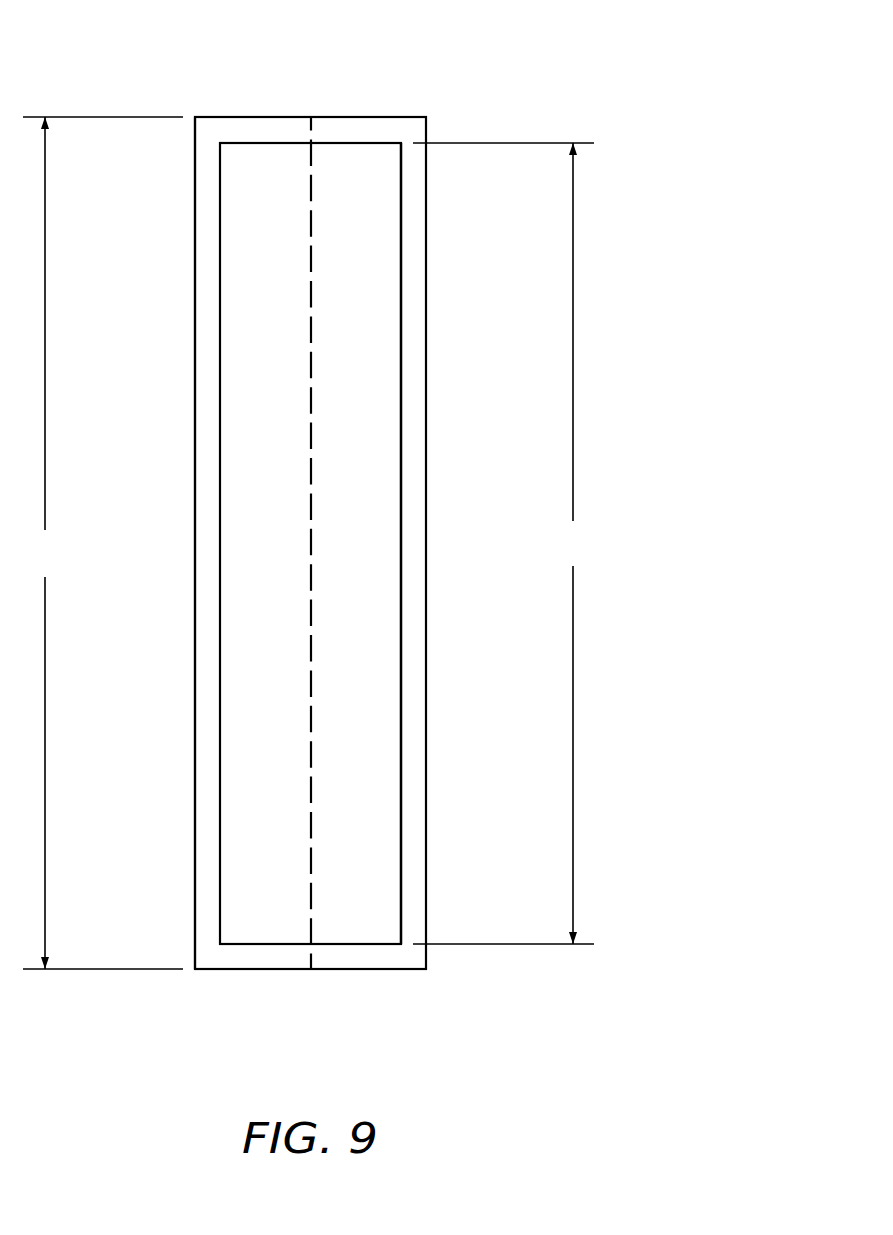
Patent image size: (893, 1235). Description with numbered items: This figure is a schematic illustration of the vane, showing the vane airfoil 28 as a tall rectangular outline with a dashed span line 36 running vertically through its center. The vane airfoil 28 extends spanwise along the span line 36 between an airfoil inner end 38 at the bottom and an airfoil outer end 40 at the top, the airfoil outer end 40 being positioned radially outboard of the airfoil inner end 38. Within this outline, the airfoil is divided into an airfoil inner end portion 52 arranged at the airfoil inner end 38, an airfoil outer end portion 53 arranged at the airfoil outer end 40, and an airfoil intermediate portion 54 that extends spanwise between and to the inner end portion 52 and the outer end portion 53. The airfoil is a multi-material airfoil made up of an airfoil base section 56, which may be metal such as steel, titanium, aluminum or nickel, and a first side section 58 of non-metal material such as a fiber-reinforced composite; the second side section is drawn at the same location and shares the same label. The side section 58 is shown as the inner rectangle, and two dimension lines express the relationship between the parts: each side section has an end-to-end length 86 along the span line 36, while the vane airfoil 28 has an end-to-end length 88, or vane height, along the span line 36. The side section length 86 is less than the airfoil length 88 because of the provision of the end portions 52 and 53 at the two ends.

The vane airfoil 28 is at (480, 88).
The span line 36 is at (311, 507).
The airfoil inner end 38 is at (296, 971).
The airfoil outer end 40 is at (326, 117).
The airfoil inner end portion 52 is at (205, 953).
The airfoil outer end portion 53 is at (200, 130).
The airfoil intermediate portion 54 is at (160, 640).
The airfoil base section 56 is at (440, 312).
The airfoil first side section 58 is at (420, 407).
The side section end-to-end length 86 is at (503, 543).
The airfoil end-to-end length 88 is at (103, 543).